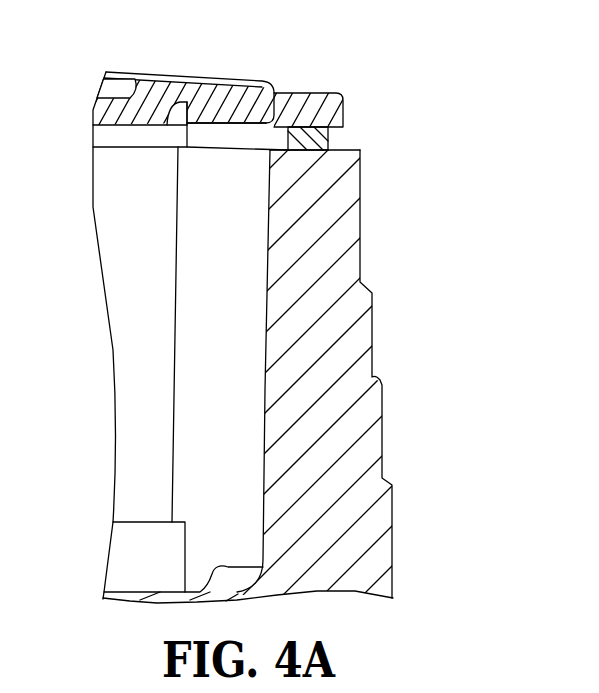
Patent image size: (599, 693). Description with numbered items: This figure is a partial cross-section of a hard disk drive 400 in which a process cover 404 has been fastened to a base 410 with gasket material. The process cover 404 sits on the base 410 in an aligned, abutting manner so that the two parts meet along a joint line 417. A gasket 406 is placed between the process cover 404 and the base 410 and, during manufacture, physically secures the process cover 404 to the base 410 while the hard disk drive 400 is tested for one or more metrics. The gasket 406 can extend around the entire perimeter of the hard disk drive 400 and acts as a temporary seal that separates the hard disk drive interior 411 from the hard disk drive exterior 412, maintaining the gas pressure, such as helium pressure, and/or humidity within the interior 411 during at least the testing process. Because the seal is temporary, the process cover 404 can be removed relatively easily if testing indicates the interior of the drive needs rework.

The hard disk drive 400 is at (232, 352).
The process cover 404 is at (209, 85).
The gasket 406 is at (329, 138).
The base 410 is at (328, 260).
The hard disk drive interior 411 is at (92, 209).
The hard disk drive exterior 412 is at (414, 357).
The joint line 417 is at (348, 130).